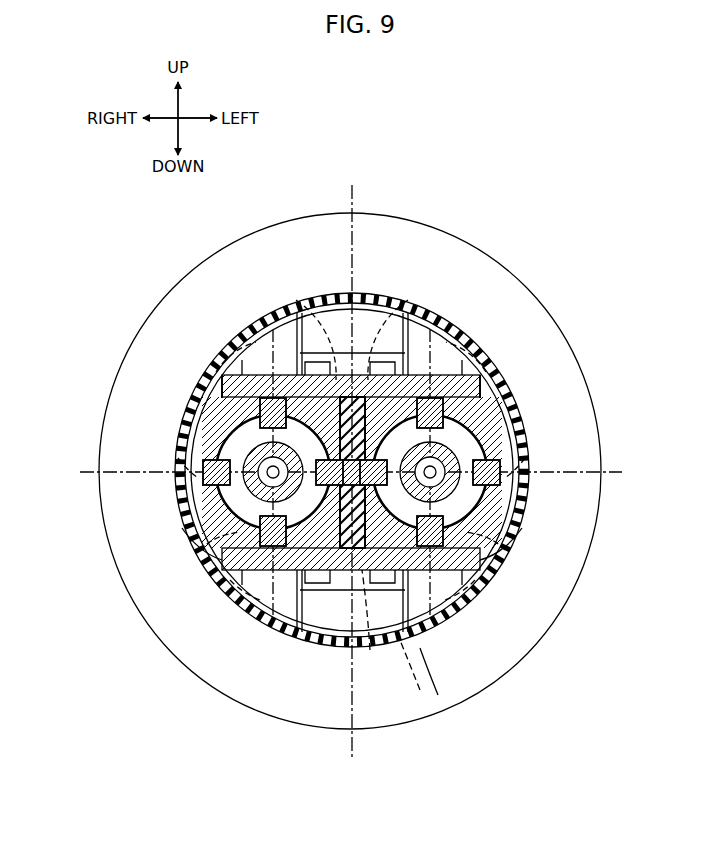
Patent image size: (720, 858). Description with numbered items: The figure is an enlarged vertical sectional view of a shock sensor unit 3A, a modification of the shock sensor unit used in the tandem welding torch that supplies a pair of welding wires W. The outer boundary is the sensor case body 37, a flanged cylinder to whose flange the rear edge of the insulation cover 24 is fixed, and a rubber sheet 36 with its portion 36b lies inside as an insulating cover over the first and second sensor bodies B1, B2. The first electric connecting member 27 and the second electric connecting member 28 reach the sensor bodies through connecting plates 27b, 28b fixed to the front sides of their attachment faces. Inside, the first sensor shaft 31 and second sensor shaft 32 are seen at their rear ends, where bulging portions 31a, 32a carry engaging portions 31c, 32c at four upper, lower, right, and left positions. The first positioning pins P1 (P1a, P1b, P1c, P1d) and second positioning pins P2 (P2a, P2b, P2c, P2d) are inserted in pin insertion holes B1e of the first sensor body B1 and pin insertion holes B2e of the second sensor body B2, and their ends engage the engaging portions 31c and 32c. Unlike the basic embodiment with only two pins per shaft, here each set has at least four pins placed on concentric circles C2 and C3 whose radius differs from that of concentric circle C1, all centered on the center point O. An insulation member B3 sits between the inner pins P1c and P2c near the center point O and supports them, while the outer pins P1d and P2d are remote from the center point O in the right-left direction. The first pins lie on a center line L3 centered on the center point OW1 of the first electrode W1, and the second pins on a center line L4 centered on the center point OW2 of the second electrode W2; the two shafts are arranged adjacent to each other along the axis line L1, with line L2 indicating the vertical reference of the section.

The shock sensor unit 3A is at (432, 134).
The sensor case body 37 is at (330, 226).
The insulation cover 24 is at (372, 300).
The rubber sheet 36 is at (352, 470).
The inner ring portion 36b is at (180, 487).
The first electric connecting member 27 is at (357, 307).
The connecting plate 27b is at (247, 375).
The second electric connecting member 28 is at (355, 620).
The connecting plate 28b is at (262, 626).
The first sensor shaft 31 is at (203, 455).
The bulging portion 31a is at (208, 432).
The engaging portions 31c is at (300, 352).
The second sensor shaft 32 is at (502, 455).
The bulging portion 32a is at (496, 432).
The engaging portions 32c is at (418, 352).
The first positioning pins P1 is at (191, 405).
The first positioning pin P1a is at (218, 375).
The first positioning pin P1b is at (230, 580).
The first positioning pin P1c is at (300, 300).
The first positioning pin P1d is at (178, 458).
The second positioning pins P2 is at (518, 408).
The second positioning pin P2a is at (484, 375).
The second positioning pin P2b is at (475, 580).
The second positioning pin P2c is at (408, 300).
The second positioning pin P2d is at (525, 458).
The first sensor body B1 is at (224, 398).
The pin insertion holes B1e is at (236, 336).
The second sensor body B2 is at (480, 398).
The pin insertion holes B2e is at (480, 346).
The insulation member B3 is at (358, 650).
The center point O is at (337, 650).
The axis line L1 is at (548, 470).
The vertical center line L2 is at (354, 195).
The center line L3 is at (268, 352).
The center line L4 is at (438, 352).
The center point OW1 is at (182, 526).
The center point OW2 is at (522, 526).
The welding wires W is at (148, 566).
The first electrode W1 is at (200, 550).
The second electrode W2 is at (505, 550).
The concentric circle C1 is at (420, 690).
The concentric circle C2 is at (438, 695).
The concentric circle C3 is at (370, 650).